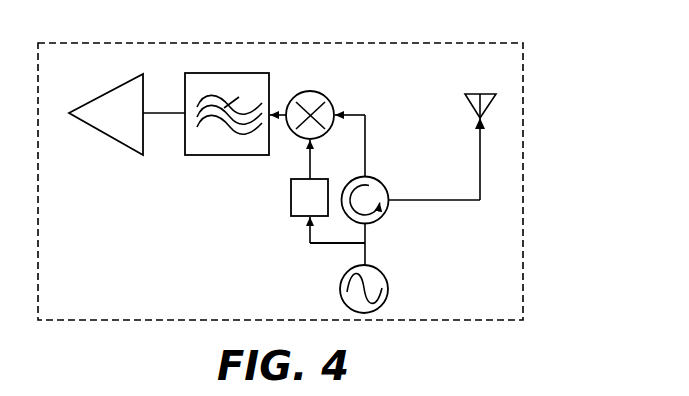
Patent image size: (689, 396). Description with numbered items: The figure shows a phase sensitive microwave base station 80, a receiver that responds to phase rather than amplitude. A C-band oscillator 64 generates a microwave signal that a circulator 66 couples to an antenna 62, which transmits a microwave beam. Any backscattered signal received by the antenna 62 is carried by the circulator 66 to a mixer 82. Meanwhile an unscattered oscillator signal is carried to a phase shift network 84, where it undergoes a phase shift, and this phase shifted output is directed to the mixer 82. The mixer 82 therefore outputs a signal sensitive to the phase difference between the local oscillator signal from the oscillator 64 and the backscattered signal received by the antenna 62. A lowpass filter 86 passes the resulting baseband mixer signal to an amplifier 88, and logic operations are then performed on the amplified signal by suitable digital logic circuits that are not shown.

The transceiver circuit 80 is at (458, 43).
The amplifier 88 is at (134, 74).
The lowpass filter 86 is at (250, 73).
The mixer 82 is at (329, 99).
The phase shift network 84 is at (314, 178).
The circulator 66 is at (382, 182).
The C-band oscillator 64 is at (381, 270).
The antenna 62 is at (472, 100).